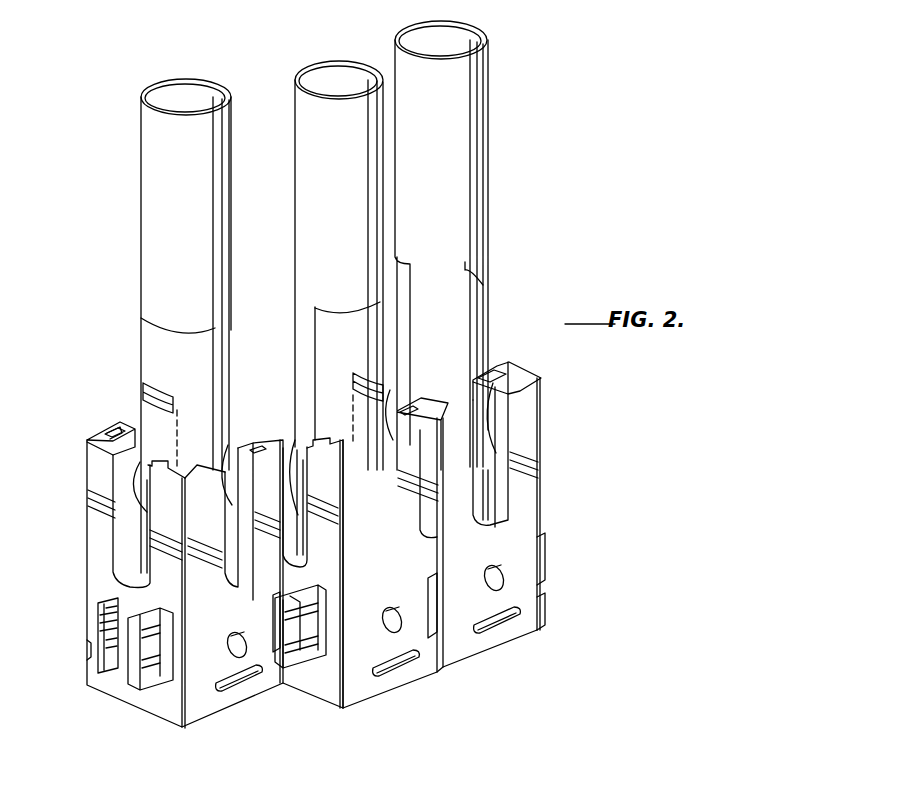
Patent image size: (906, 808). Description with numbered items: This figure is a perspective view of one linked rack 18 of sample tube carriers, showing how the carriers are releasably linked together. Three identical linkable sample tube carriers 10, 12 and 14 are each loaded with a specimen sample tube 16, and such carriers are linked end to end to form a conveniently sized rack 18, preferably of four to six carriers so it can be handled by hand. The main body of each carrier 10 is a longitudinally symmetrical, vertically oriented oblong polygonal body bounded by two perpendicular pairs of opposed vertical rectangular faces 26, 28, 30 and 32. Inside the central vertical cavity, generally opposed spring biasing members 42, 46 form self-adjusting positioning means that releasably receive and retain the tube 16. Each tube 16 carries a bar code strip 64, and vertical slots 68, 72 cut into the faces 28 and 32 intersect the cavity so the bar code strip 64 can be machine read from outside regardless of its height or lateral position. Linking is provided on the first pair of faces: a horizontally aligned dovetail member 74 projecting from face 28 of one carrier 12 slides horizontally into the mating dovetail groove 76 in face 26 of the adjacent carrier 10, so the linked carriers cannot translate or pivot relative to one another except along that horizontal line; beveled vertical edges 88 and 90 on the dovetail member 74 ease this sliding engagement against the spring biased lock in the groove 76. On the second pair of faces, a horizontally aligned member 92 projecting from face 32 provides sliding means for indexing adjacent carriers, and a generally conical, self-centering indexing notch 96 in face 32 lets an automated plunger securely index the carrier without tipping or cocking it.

The sample tube carrier 10 is at (80, 490).
The sample tube carrier 12 is at (385, 692).
The sample tube carrier 14 is at (520, 632).
The specimen sample tube 16 is at (142, 129).
The rack 18 is at (585, 446).
The vertical rectangular face 26 is at (525, 378).
The vertical rectangular face 28 is at (95, 549).
The vertical rectangular face 30 is at (108, 427).
The vertical rectangular face 32 is at (200, 700).
The spring biasing member 42 is at (493, 406).
The spring biasing member 46 is at (140, 468).
The bar code strip 64 is at (142, 337).
The vertical slot 68 is at (115, 514).
The vertical slot 72 is at (495, 479).
The dovetail member 74 is at (105, 634).
The dovetail groove 76 is at (275, 612).
The beveled vertical edge 88 is at (100, 612).
The beveled vertical edge 90 is at (135, 625).
The horizontally aligned member 92 is at (243, 684).
The indexing notch 96 is at (232, 646).